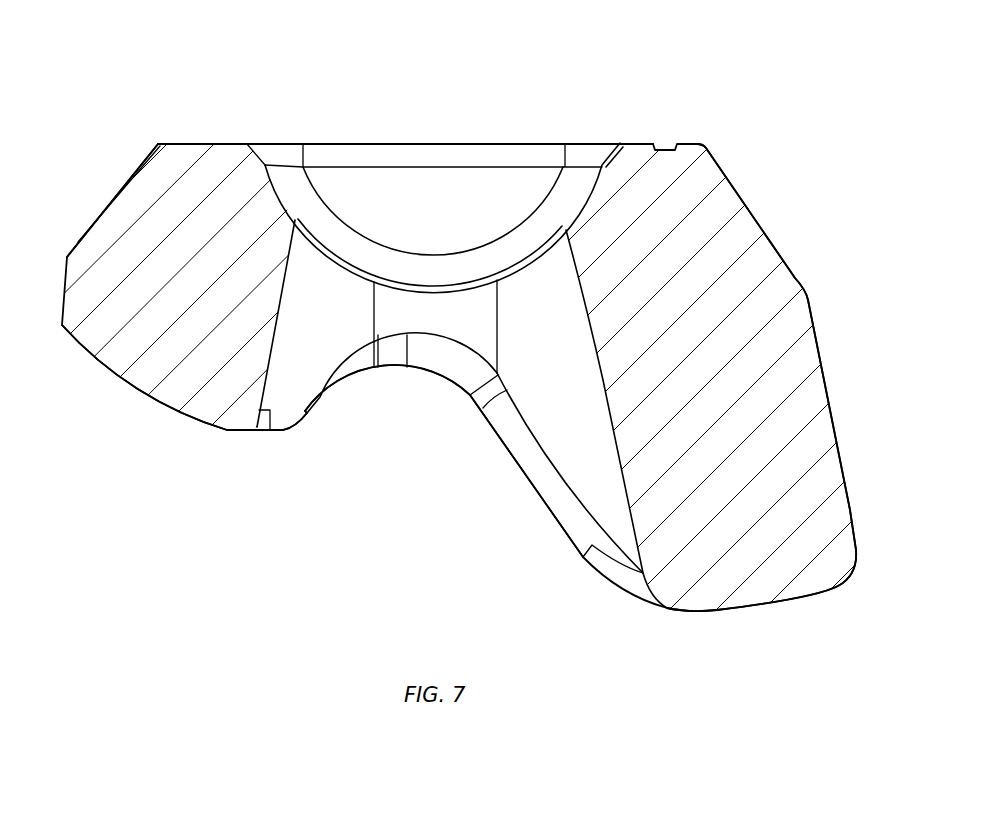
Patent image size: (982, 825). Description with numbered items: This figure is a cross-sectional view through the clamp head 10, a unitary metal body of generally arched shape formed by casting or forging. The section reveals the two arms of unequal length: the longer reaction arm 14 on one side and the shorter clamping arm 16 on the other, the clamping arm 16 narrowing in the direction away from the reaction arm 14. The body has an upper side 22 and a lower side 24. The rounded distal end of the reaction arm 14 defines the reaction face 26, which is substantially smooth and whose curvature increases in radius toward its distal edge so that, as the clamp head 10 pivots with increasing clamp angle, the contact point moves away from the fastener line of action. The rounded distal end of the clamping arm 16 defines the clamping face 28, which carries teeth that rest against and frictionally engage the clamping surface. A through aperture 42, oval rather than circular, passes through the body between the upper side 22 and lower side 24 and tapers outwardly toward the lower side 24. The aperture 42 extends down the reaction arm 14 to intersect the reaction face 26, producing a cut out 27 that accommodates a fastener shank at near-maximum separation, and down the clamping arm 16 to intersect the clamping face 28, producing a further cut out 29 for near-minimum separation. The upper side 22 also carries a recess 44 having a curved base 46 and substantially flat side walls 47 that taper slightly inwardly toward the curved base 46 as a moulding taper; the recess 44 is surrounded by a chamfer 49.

The clamp head 10 is at (750, 110).
The reaction arm 14 is at (778, 293).
The clamping arm 16 is at (95, 242).
The upper side 22 is at (188, 144).
The lower side 24 is at (528, 480).
The reaction face 26 is at (748, 612).
The cut out 27 is at (667, 612).
The clamping face 28 is at (133, 392).
The further cut out 29 is at (257, 425).
The through aperture 42 is at (292, 348).
The recess 44 is at (480, 203).
The curved base 46 is at (584, 168).
The side walls 47 is at (398, 192).
The chamfer 49 is at (274, 152).